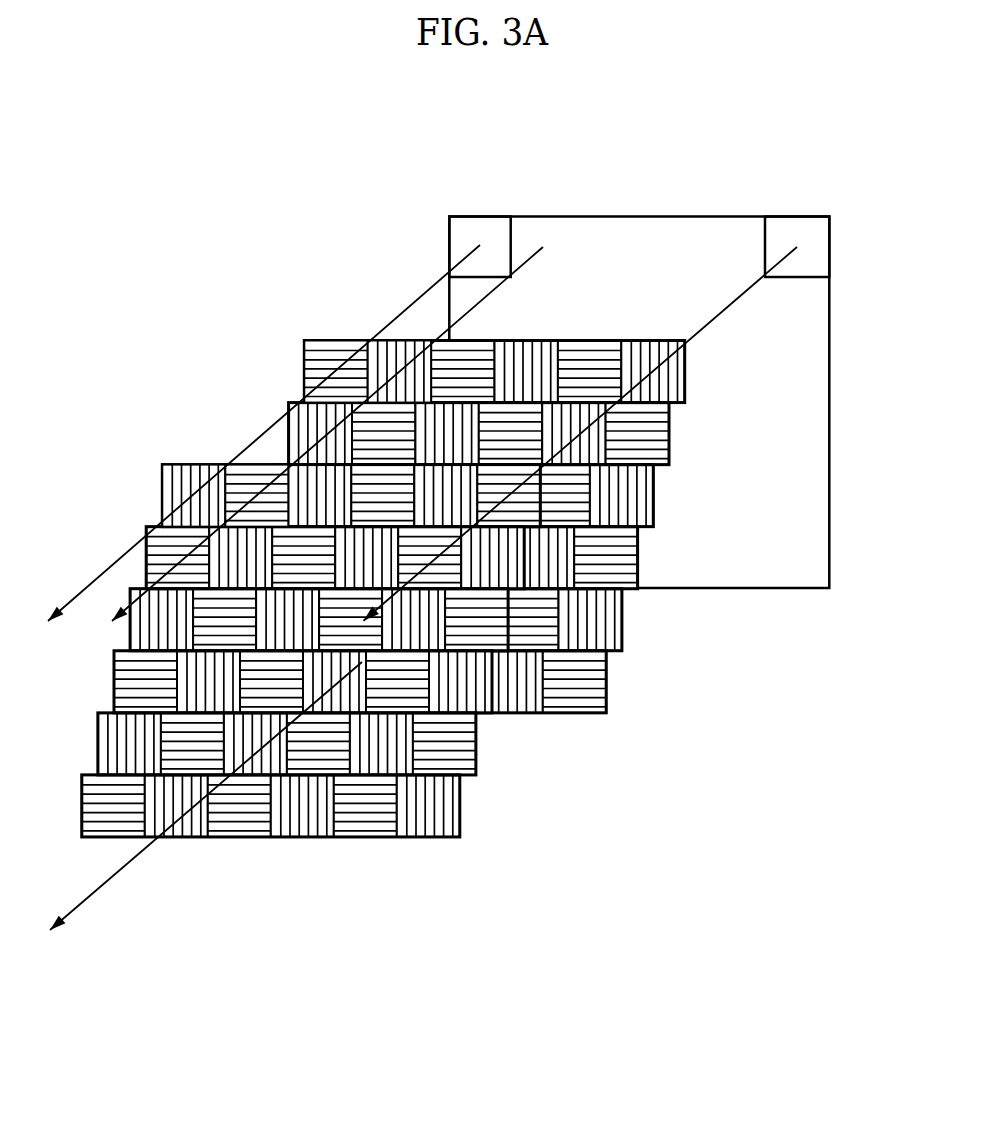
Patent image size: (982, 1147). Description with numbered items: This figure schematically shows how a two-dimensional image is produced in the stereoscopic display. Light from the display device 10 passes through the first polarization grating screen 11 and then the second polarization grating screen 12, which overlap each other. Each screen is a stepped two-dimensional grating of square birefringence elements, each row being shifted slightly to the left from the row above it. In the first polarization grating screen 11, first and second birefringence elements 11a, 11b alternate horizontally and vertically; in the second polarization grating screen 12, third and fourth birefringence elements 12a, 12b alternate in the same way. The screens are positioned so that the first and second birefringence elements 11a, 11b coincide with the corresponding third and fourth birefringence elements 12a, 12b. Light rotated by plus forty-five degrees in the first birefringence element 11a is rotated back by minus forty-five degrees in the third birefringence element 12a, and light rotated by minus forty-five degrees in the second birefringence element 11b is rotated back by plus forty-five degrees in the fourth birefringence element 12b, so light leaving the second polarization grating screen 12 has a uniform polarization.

The display device 10 is at (829, 515).
The first polarization grating screen 11 is at (455, 490).
The first birefringence element 11a is at (330, 347).
The second birefringence element 11b is at (400, 347).
The second polarization grating screen 12 is at (311, 613).
The third birefringence element 12a is at (183, 465).
The fourth birefringence element 12b is at (260, 472).